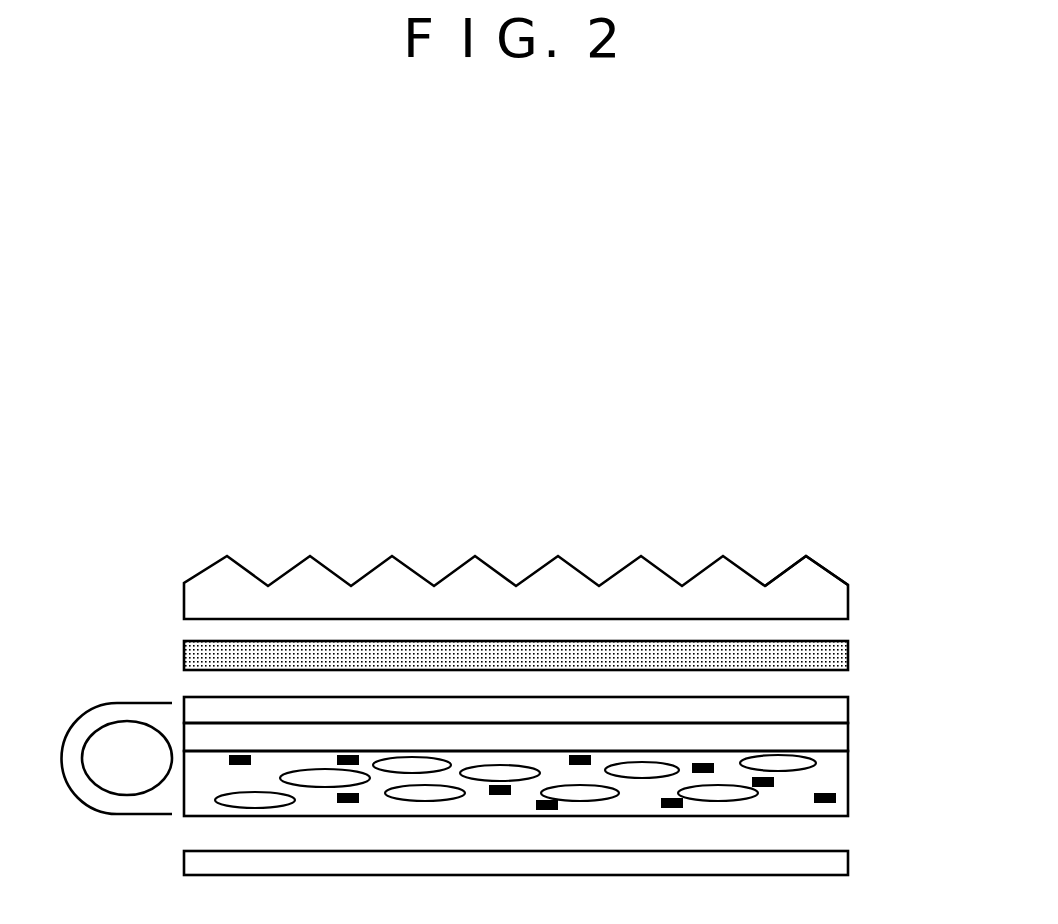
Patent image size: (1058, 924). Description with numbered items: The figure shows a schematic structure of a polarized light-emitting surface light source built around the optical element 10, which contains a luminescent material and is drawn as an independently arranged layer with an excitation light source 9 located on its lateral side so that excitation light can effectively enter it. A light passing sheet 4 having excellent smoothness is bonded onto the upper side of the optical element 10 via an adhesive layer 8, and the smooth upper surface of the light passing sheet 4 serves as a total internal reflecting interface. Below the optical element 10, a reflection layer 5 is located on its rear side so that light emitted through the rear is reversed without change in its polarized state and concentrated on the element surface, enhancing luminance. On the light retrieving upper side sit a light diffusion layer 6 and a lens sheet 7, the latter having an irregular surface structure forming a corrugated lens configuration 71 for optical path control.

The light passing sheet 4 is at (840, 710).
The reflection layer 5 is at (838, 862).
The light diffusion layer 6 is at (838, 655).
The lens sheet 7 is at (810, 602).
The corrugated lens configuration 71 is at (808, 570).
The adhesive layer 8 is at (838, 738).
The excitation light source 9 is at (121, 737).
The optical element 10 is at (838, 783).